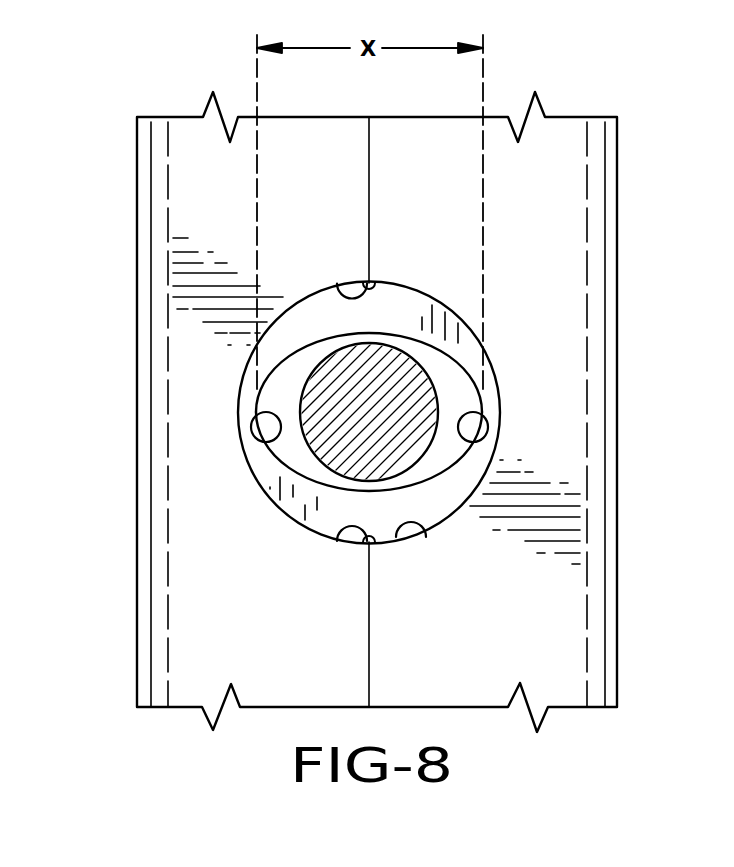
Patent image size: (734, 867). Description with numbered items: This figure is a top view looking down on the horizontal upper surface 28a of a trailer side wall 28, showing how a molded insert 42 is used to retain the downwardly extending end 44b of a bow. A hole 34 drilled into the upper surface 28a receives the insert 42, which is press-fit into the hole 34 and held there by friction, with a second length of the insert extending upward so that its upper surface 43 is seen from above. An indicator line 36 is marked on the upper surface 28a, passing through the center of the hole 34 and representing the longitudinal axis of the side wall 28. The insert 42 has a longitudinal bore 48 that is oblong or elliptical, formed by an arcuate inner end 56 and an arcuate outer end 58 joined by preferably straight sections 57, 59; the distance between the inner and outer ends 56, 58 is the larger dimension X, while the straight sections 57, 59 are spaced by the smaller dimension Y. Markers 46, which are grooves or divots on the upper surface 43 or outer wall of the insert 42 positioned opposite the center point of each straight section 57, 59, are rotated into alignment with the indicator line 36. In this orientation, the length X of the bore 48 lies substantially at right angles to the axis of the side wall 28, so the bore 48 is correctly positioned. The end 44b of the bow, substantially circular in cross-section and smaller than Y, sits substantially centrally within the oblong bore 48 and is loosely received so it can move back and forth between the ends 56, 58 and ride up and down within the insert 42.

The side wall 28 is at (622, 287).
The horizontal upper surface 28a is at (543, 245).
The hole 34 is at (400, 543).
The indicator line 36 is at (370, 183).
The insert 42 is at (240, 401).
The upper surface 43 is at (407, 302).
The end of bow 44b is at (412, 448).
The markers 46 is at (338, 282).
The longitudinal bore 48 is at (290, 462).
The inner end of bore 56 is at (257, 441).
The straight section of bore 57 is at (371, 333).
The outer end of bore 58 is at (490, 443).
The straight section of bore 59 is at (372, 490).